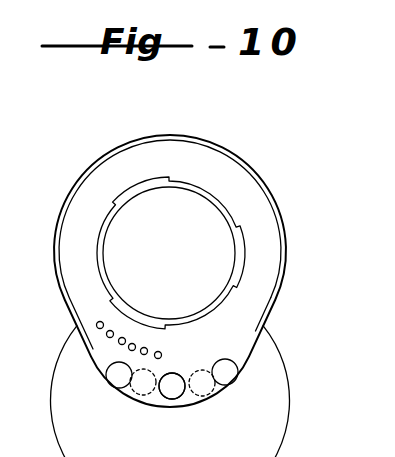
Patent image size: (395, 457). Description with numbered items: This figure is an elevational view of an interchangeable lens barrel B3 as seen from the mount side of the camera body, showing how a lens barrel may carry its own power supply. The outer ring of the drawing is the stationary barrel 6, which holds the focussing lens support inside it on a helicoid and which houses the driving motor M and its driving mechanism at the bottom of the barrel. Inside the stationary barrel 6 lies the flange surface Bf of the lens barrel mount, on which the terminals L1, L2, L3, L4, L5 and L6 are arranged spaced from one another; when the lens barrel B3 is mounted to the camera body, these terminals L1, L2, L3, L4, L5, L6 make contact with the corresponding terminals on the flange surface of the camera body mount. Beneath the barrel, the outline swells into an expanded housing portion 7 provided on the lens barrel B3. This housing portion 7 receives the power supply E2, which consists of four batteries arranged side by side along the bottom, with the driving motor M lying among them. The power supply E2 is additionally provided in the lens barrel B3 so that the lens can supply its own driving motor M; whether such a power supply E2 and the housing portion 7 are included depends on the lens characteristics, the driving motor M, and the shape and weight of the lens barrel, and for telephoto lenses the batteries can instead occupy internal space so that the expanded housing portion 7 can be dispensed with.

The stationary barrel 6 is at (214, 143).
The lens barrel B3 is at (258, 171).
The flange surface Bf is at (284, 265).
The expanded housing portion 7 is at (204, 400).
The power supply E2 is at (141, 385).
The driving motor M is at (172, 389).
The terminal L1 is at (161, 353).
The terminal L2 is at (144, 348).
The terminal L3 is at (132, 344).
The terminal L4 is at (119, 343).
The terminal L5 is at (106, 335).
The terminal L6 is at (96, 324).